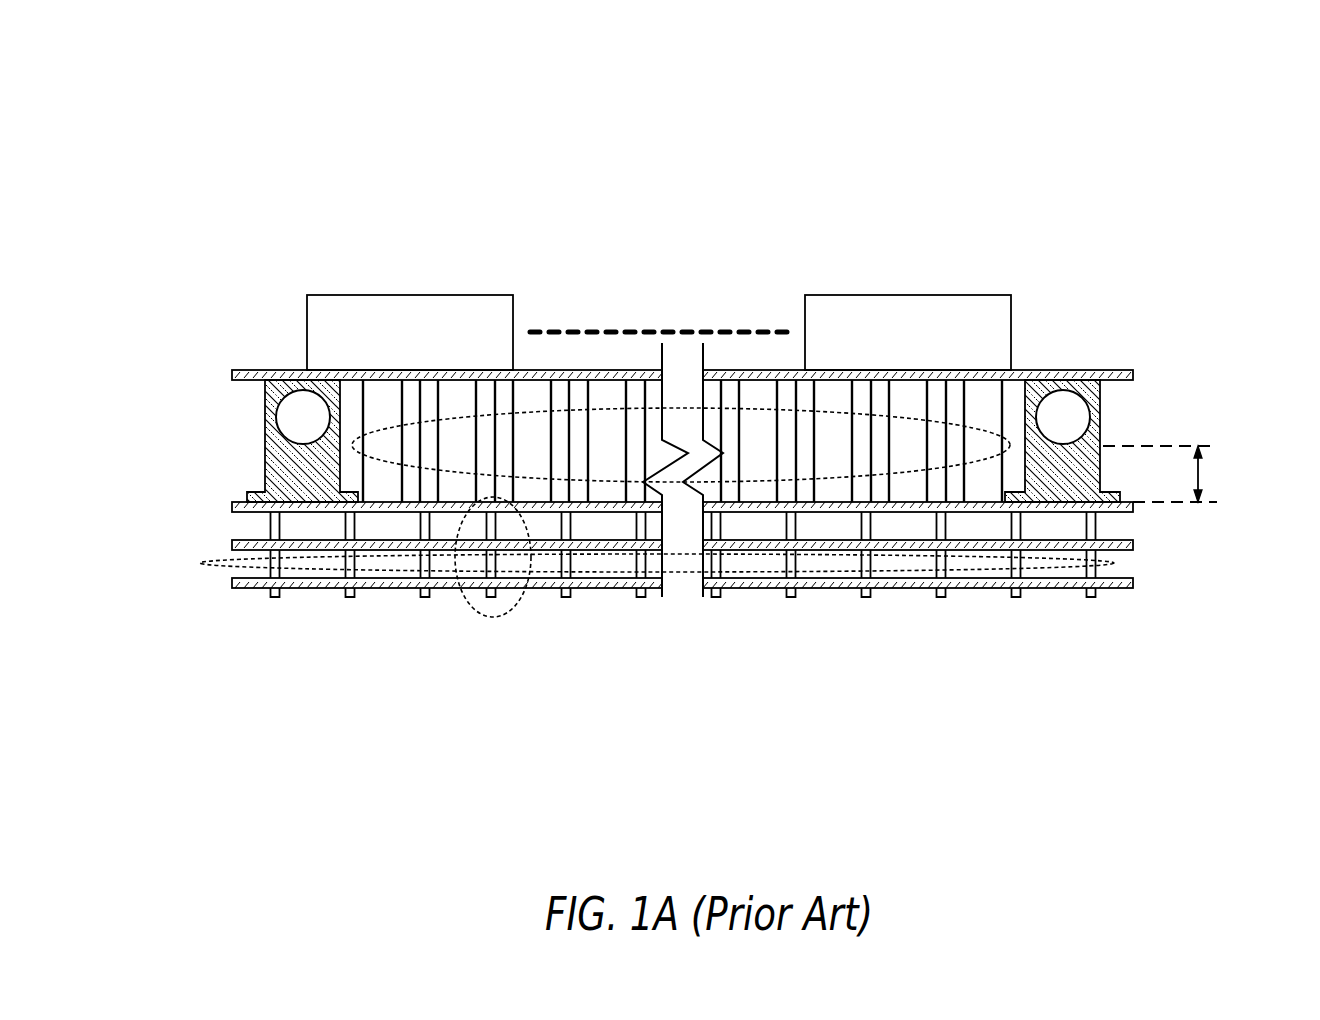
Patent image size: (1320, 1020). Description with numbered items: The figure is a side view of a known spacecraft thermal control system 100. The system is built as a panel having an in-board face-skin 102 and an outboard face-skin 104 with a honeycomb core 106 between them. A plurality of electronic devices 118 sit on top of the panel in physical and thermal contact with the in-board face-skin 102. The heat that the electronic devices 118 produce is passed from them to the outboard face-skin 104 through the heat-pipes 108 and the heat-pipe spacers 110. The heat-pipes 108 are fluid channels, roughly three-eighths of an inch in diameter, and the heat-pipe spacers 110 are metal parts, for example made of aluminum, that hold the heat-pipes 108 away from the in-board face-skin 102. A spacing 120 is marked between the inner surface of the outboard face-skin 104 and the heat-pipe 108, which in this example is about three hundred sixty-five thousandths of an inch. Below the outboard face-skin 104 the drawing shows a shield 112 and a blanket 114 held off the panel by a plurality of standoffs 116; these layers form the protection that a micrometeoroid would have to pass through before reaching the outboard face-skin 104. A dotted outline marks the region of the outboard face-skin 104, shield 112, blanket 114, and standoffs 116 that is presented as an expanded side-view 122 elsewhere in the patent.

The spacecraft thermal control system 100 is at (912, 112).
The in-board face-skin 102 is at (1085, 370).
The outboard face-skin 104 is at (1103, 512).
The honeycomb core 106 is at (753, 482).
The heat-pipe 108 is at (683, 417).
The heat-pipe spacer 110 is at (282, 463).
The shield 112 is at (982, 588).
The blanket 114 is at (1057, 550).
The standoffs 116 is at (197, 564).
The electronic devices 118 is at (659, 332).
The spacing 120 is at (1202, 470).
The expanded side-view 122 is at (477, 615).